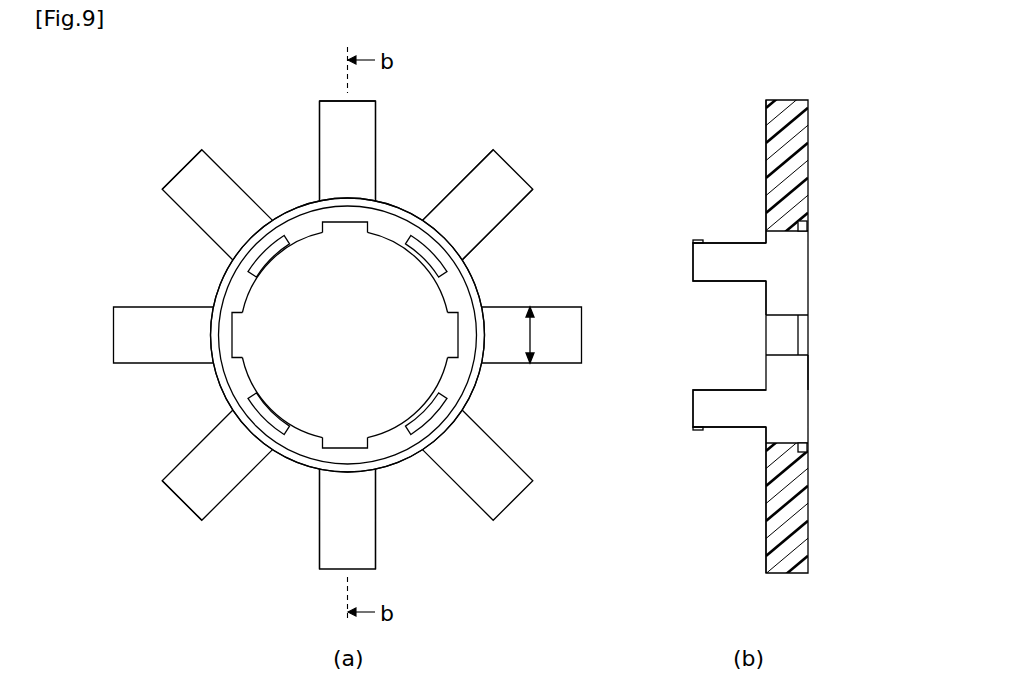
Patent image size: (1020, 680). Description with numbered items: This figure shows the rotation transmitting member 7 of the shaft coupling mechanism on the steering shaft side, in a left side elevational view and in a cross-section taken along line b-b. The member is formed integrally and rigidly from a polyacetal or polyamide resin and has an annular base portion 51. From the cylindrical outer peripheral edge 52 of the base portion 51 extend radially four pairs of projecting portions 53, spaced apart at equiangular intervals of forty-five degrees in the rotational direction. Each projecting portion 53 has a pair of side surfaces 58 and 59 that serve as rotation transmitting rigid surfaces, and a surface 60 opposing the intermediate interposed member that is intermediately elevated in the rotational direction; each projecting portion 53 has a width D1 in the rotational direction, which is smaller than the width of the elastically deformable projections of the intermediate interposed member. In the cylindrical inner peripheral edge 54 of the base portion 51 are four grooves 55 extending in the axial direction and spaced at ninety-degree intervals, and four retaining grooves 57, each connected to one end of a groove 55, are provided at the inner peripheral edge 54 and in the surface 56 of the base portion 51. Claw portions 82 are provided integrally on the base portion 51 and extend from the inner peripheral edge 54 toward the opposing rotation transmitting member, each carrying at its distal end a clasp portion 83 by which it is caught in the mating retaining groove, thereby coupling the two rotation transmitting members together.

The rotation transmitting member 7 is at (465, 150).
The annular base portion 51 is at (462, 288).
The cylindrical outer peripheral edge 52 is at (215, 382).
The projecting portions 53 is at (185, 195).
The cylindrical inner peripheral edge 54 is at (250, 297).
The grooves 55 is at (347, 227).
The surface of the base portion 56 is at (808, 375).
The retaining grooves 57 is at (804, 224).
The side surface 58 is at (378, 157).
The side surface 59 is at (318, 157).
The surface of the projecting portion 60 is at (212, 167).
The claw portions 82 is at (265, 262).
The clasp portion 83 is at (700, 241).
The width D1 is at (532, 335).